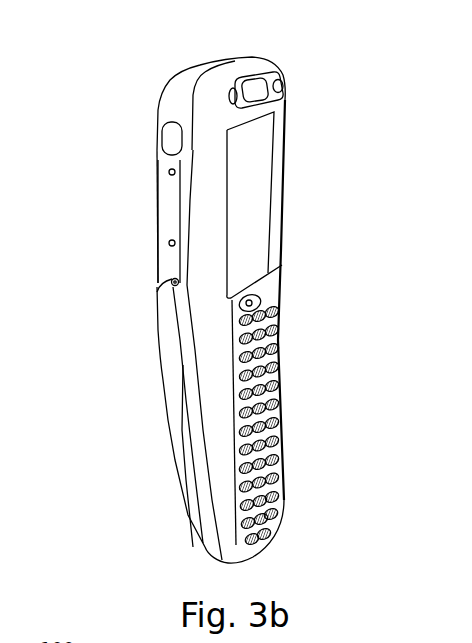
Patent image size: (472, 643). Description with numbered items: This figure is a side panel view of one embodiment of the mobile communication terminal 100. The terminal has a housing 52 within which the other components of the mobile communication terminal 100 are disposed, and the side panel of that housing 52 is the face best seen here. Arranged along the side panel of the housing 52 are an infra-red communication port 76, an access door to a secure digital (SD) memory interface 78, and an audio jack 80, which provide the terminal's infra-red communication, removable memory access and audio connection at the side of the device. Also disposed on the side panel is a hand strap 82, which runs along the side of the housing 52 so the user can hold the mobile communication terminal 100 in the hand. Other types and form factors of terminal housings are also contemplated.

The mobile communication terminal 100 is at (167, 69).
The housing 52 is at (262, 64).
The infra-red communication port 76 is at (173, 133).
The access door to a secure digital (SD) memory interface 78 is at (170, 208).
The audio jack 80 is at (172, 278).
The hand strap 82 is at (177, 355).